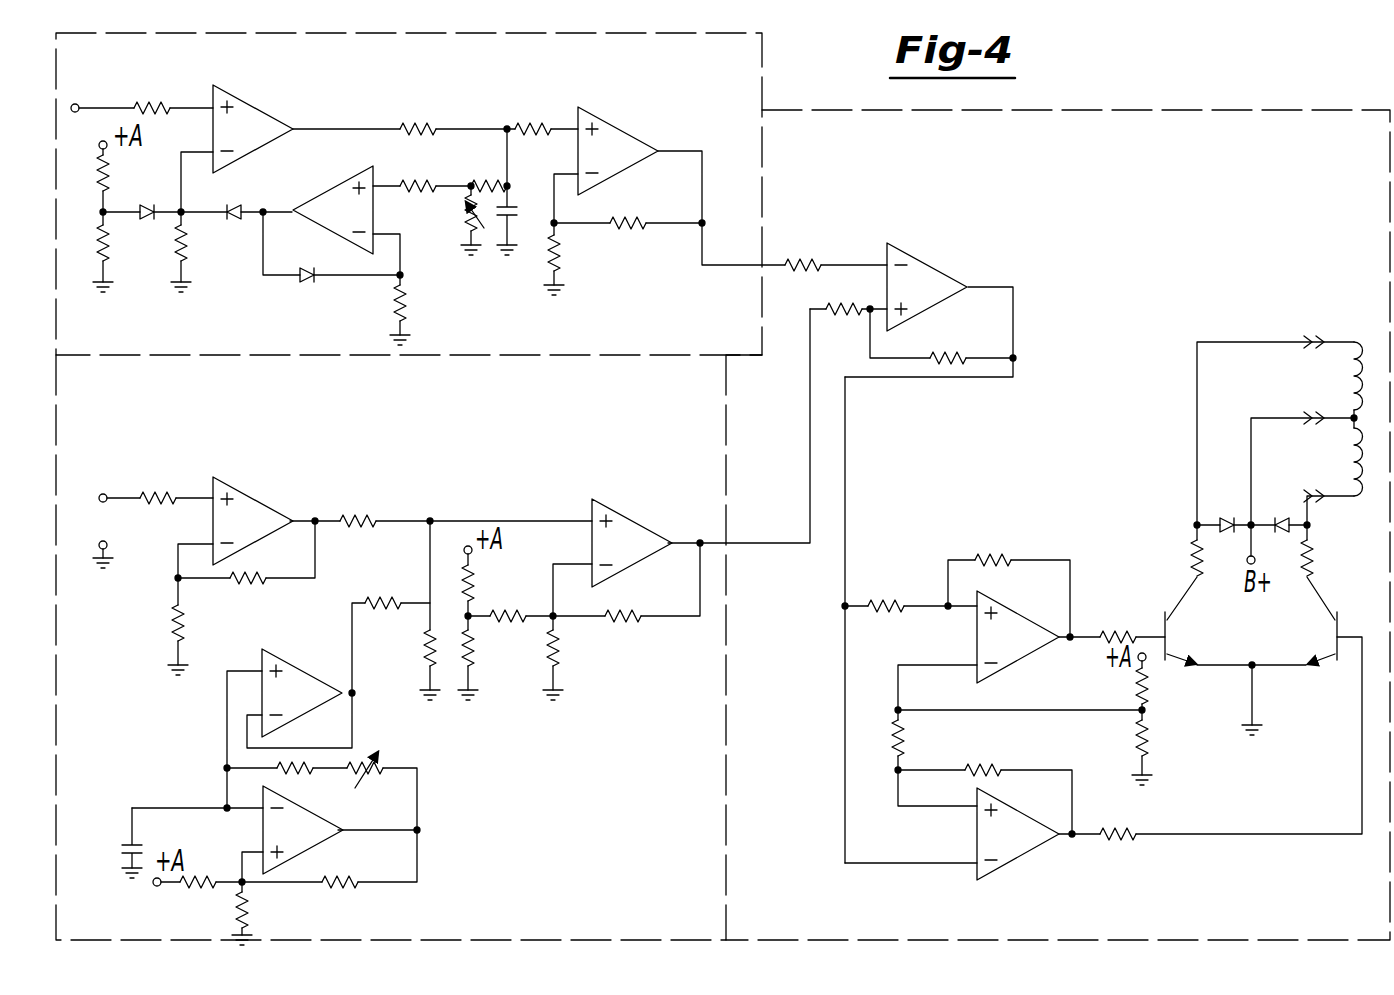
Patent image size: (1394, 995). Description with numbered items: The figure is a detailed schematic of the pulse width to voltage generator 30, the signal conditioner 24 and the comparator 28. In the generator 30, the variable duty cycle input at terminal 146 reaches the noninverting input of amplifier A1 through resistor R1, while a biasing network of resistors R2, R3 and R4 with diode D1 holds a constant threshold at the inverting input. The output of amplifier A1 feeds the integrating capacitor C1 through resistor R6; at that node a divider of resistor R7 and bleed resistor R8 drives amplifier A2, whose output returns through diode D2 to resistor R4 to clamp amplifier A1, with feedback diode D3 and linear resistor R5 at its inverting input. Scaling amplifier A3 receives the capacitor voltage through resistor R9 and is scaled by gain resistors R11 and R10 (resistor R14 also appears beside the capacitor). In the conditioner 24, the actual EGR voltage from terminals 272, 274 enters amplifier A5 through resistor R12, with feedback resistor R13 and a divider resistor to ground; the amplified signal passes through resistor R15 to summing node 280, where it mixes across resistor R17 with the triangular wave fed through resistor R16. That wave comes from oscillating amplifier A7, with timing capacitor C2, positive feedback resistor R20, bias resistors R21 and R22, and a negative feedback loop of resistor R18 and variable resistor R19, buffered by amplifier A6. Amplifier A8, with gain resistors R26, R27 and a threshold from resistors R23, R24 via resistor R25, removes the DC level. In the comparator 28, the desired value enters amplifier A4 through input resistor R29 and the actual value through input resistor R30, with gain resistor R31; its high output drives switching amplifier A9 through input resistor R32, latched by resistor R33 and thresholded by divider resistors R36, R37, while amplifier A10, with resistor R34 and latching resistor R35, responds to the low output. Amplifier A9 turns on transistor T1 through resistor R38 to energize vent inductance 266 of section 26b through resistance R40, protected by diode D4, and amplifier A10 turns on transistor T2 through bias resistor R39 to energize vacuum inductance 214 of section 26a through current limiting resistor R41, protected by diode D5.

The pulse width to voltage generator 30 is at (764, 90).
The signal conditioner 24 is at (730, 642).
The comparator 28 is at (1122, 108).
The variable duty cycle input 146 is at (102, 106).
The sensor terminal 272 is at (108, 492).
The sensor terminal 274 is at (112, 545).
The summing node 280 is at (440, 518).
The inductance 214 is at (1374, 496).
The inductance 266 is at (1372, 348).
The first section of solenoid 26a is at (1307, 468).
The second section of solenoid 26b is at (1280, 430).
The amplifier A1 is at (272, 148).
The amplifier A2 is at (375, 212).
The scaling amplifier A3 is at (630, 120).
The comparator amplifier A4 is at (935, 318).
The amplifier A5 is at (284, 470).
The buffer amplifier A6 is at (326, 650).
The oscillating amplifier A7 is at (260, 826).
The amplifier A8 is at (592, 502).
The high gain switching amplifier A9 is at (1018, 668).
The amplifier A10 is at (1018, 864).
The resistor R1 is at (162, 106).
The resistor R2 is at (110, 178).
The resistor R3 is at (112, 254).
The resistor R4 is at (190, 254).
The linear resistor R5 is at (410, 312).
The resistor R6 is at (433, 128).
The resistor R7 is at (425, 184).
The bleed resistor R8 is at (462, 232).
The resistor R9 is at (545, 126).
The gain resistor R10 is at (560, 272).
The gain resistor R11 is at (638, 228).
The resistor R12 is at (165, 494).
The feedback resistor R13 is at (258, 582).
The resistor R14 is at (508, 184).
The resistor R15 is at (378, 518).
The resistor R16 is at (408, 582).
The resistor R17 is at (426, 644).
The resistor R18 is at (298, 776).
The variable resistor R19 is at (386, 760).
The positive feedback resistor R20 is at (344, 878).
The resistor R21 is at (250, 912).
The resistor R22 is at (196, 888).
The divider resistor R23 is at (476, 588).
The divider resistor R24 is at (478, 676).
The resistor R25 is at (500, 622).
The gain resistor R26 is at (566, 662).
The gain resistor R27 is at (646, 620).
The input resistor R29 is at (800, 262).
The input resistor R30 is at (862, 306).
The gain resistor R31 is at (956, 364).
The input resistor R32 is at (880, 612).
The latching resistor R33 is at (1006, 556).
The resistor R34 is at (906, 742).
The latching resistor R35 is at (1000, 768).
The divider resistor R36 is at (1150, 690).
The divider resistor R37 is at (1136, 738).
The resistor R38 is at (1118, 632).
The bias resistor R39 is at (1140, 832).
The resistance R40 is at (1194, 556).
The current limiting resistor R41 is at (1312, 560).
The integrating capacitor C1 is at (512, 212).
The timing capacitor C2 is at (130, 834).
The diode D1 is at (147, 222).
The diode D2 is at (240, 206).
The feedback diode D3 is at (306, 283).
The diode D4 is at (1243, 496).
The diode D5 is at (1284, 518).
The driving transistor T1 is at (1178, 634).
The driving transistor T2 is at (1336, 638).